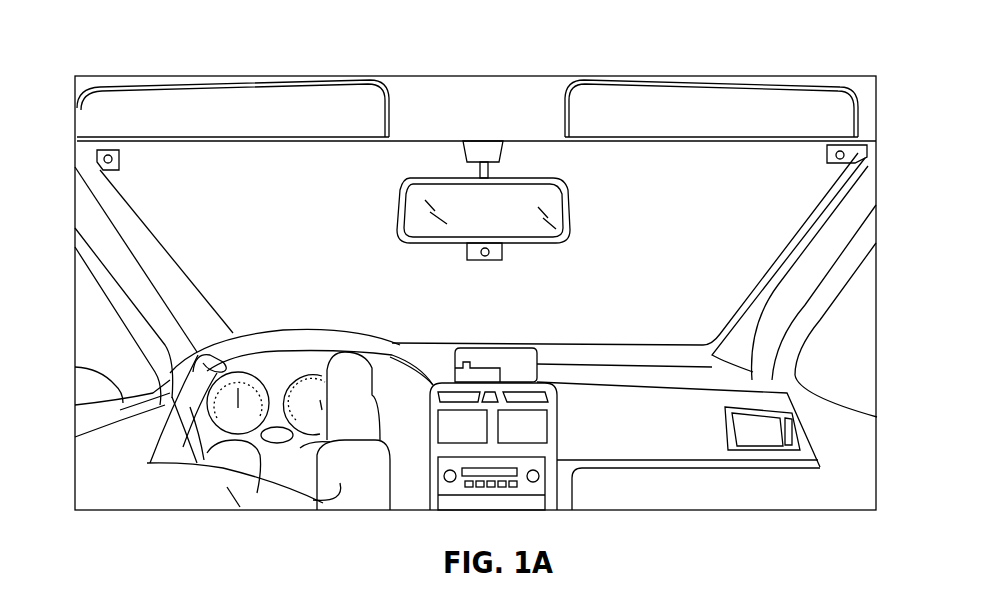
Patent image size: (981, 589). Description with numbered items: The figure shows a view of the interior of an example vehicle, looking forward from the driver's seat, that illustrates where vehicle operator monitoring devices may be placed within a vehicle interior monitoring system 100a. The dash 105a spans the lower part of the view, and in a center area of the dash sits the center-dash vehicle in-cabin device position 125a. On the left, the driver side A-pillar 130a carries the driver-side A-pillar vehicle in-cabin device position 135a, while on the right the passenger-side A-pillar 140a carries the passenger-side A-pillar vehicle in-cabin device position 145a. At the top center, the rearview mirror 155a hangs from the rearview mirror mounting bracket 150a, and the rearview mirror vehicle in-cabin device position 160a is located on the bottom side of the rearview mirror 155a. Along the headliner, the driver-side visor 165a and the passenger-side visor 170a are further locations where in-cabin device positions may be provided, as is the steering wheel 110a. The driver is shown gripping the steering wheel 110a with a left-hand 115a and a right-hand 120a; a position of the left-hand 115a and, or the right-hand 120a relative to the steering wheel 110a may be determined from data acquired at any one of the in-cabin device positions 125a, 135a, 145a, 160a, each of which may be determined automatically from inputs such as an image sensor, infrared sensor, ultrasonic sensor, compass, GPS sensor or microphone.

The vehicle interior monitoring system 100a is at (221, 52).
The dashboard 105a is at (617, 450).
The steering wheel 110a is at (250, 330).
The left-hand 115a is at (107, 366).
The right-hand 120a is at (355, 365).
The center-dash vehicle in-cabin device position 125a is at (515, 350).
The driver side A-pillar 130a is at (100, 218).
The driver-side A-pillar vehicle in-cabin device position 135a is at (105, 158).
The passenger-side A-pillar 140a is at (862, 240).
The passenger-side A-pillar vehicle in-cabin device position 145a is at (850, 152).
The rearview mirror mounting bracket 150a is at (480, 150).
The rearview mirror 155a is at (530, 197).
The rearview mirror vehicle in-cabin device position 160a is at (497, 262).
The driver-side visor 165a is at (305, 112).
The passenger-side visor 170a is at (711, 81).